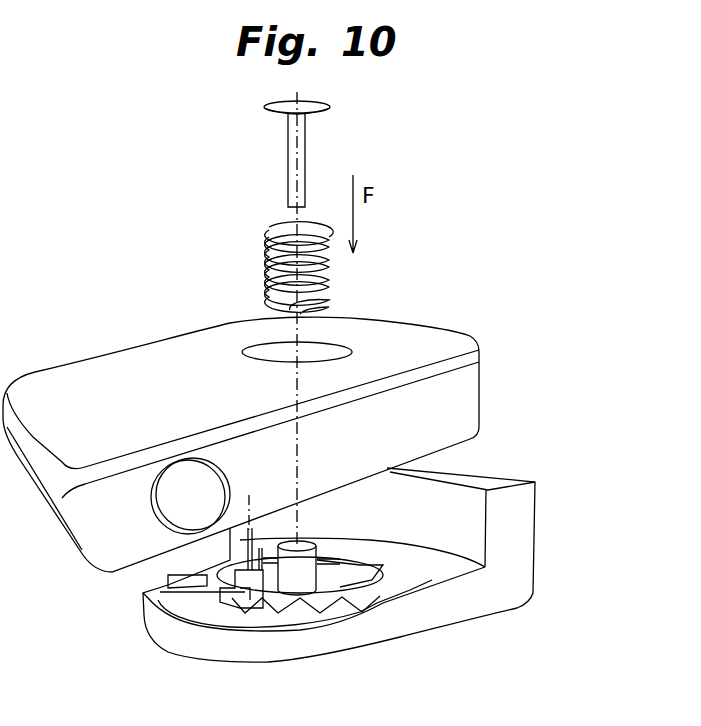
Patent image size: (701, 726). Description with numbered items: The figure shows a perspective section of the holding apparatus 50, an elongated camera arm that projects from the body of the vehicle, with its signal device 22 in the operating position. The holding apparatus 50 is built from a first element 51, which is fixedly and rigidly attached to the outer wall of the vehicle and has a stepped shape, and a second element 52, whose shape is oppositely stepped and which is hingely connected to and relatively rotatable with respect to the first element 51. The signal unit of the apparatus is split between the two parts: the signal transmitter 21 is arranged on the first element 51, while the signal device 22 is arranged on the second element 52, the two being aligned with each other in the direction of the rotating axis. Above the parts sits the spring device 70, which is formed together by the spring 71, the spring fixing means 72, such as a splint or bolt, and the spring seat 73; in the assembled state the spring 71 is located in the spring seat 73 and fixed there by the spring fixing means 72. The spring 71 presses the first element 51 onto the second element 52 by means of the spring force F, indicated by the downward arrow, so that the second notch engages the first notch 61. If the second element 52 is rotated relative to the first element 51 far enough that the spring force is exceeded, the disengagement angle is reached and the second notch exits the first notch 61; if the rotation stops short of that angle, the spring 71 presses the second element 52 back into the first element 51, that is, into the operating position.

The spring device 70 is at (358, 207).
The spring fixing means 72 is at (303, 155).
The spring 71 is at (271, 257).
The spring seat 73 is at (320, 357).
The second element 52 is at (241, 427).
The holding apparatus 50 is at (346, 536).
The first element 51 is at (460, 603).
The signal transmitter 21 is at (268, 628).
The signal device 22 is at (232, 602).
The first notch 61 is at (330, 615).